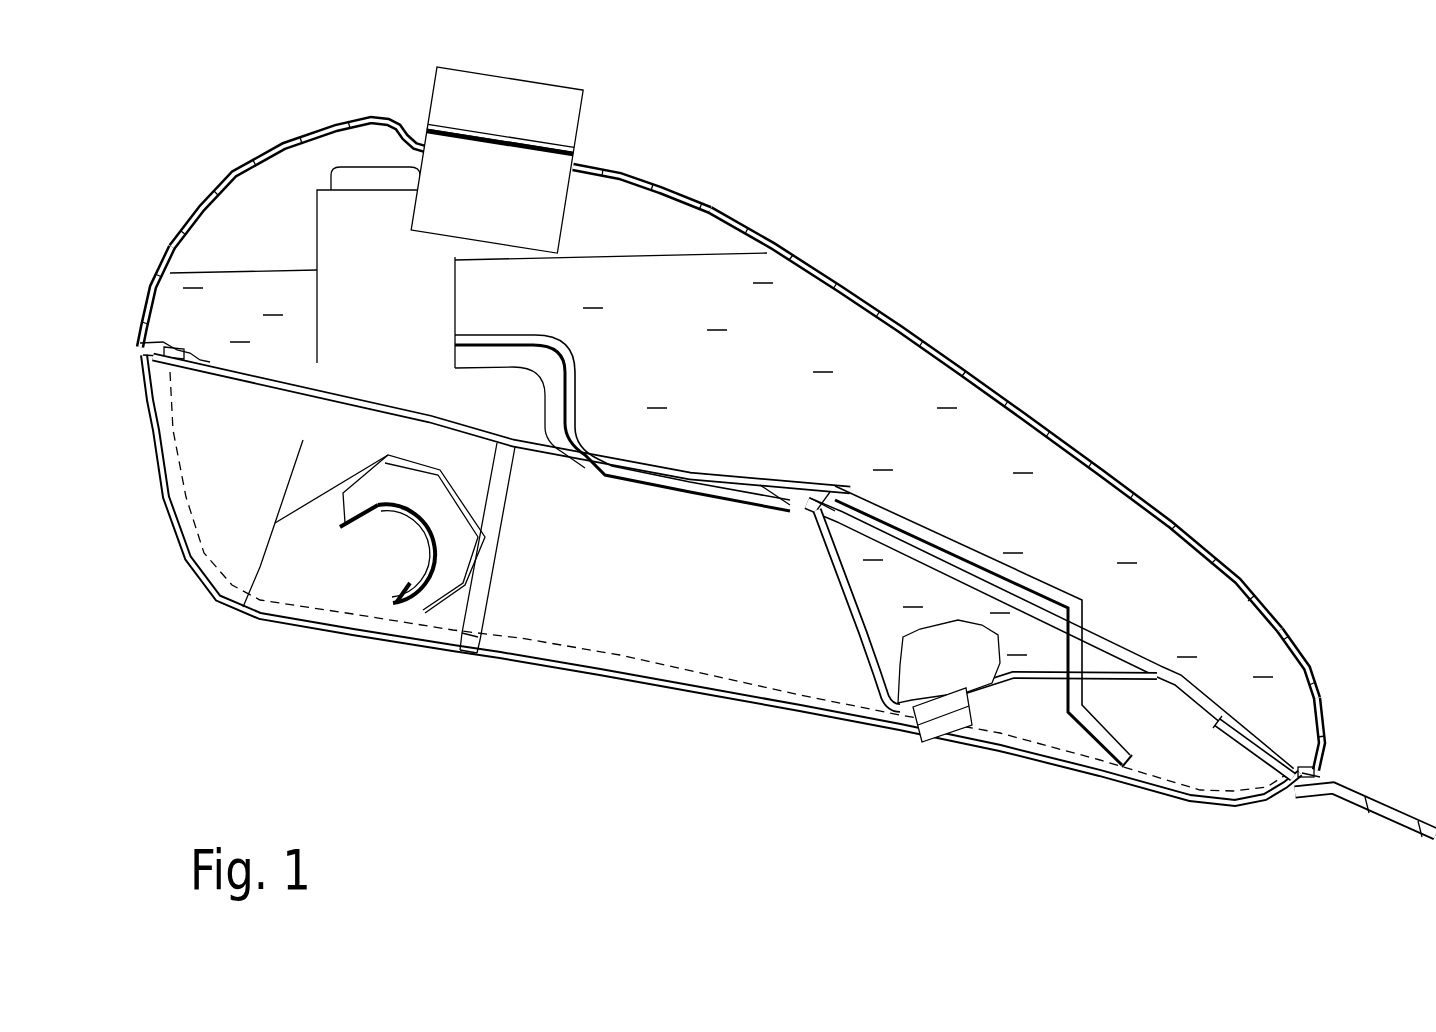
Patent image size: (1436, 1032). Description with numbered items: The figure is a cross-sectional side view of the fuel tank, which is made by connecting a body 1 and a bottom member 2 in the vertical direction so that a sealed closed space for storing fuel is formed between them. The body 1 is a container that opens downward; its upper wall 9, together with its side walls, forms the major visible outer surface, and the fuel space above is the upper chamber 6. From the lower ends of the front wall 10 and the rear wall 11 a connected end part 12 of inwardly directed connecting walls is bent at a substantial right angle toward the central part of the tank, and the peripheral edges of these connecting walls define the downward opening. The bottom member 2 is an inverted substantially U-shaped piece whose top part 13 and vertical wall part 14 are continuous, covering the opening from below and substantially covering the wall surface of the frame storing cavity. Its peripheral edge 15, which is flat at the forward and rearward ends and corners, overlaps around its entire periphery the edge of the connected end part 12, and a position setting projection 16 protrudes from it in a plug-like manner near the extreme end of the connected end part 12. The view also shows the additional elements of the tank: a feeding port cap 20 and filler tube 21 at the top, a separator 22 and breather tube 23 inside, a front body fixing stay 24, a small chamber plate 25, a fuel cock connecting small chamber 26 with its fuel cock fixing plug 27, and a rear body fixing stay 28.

The body 1 is at (976, 296).
The bottom member 2 is at (684, 661).
The upper chamber 6 is at (763, 267).
The upper wall 9 is at (647, 180).
The front wall 10 is at (163, 245).
The rear wall 11 is at (1322, 738).
The connected end part 12 is at (157, 287).
The top part 13 is at (628, 472).
The vertical wall part 14 is at (567, 637).
The peripheral edge 15 is at (170, 360).
The position setting projection 16 is at (197, 355).
The feeding port cap 20 is at (557, 87).
The filler tube 21 is at (553, 220).
The separator 22 is at (313, 215).
The breather tube 23 is at (577, 360).
The front body fixing stay 24 is at (415, 590).
The small chamber plate 25 is at (860, 640).
The fuel cock connecting small chamber 26 is at (890, 657).
The fuel cock fixing plug 27 is at (920, 730).
The rear body fixing stay 28 is at (1367, 787).